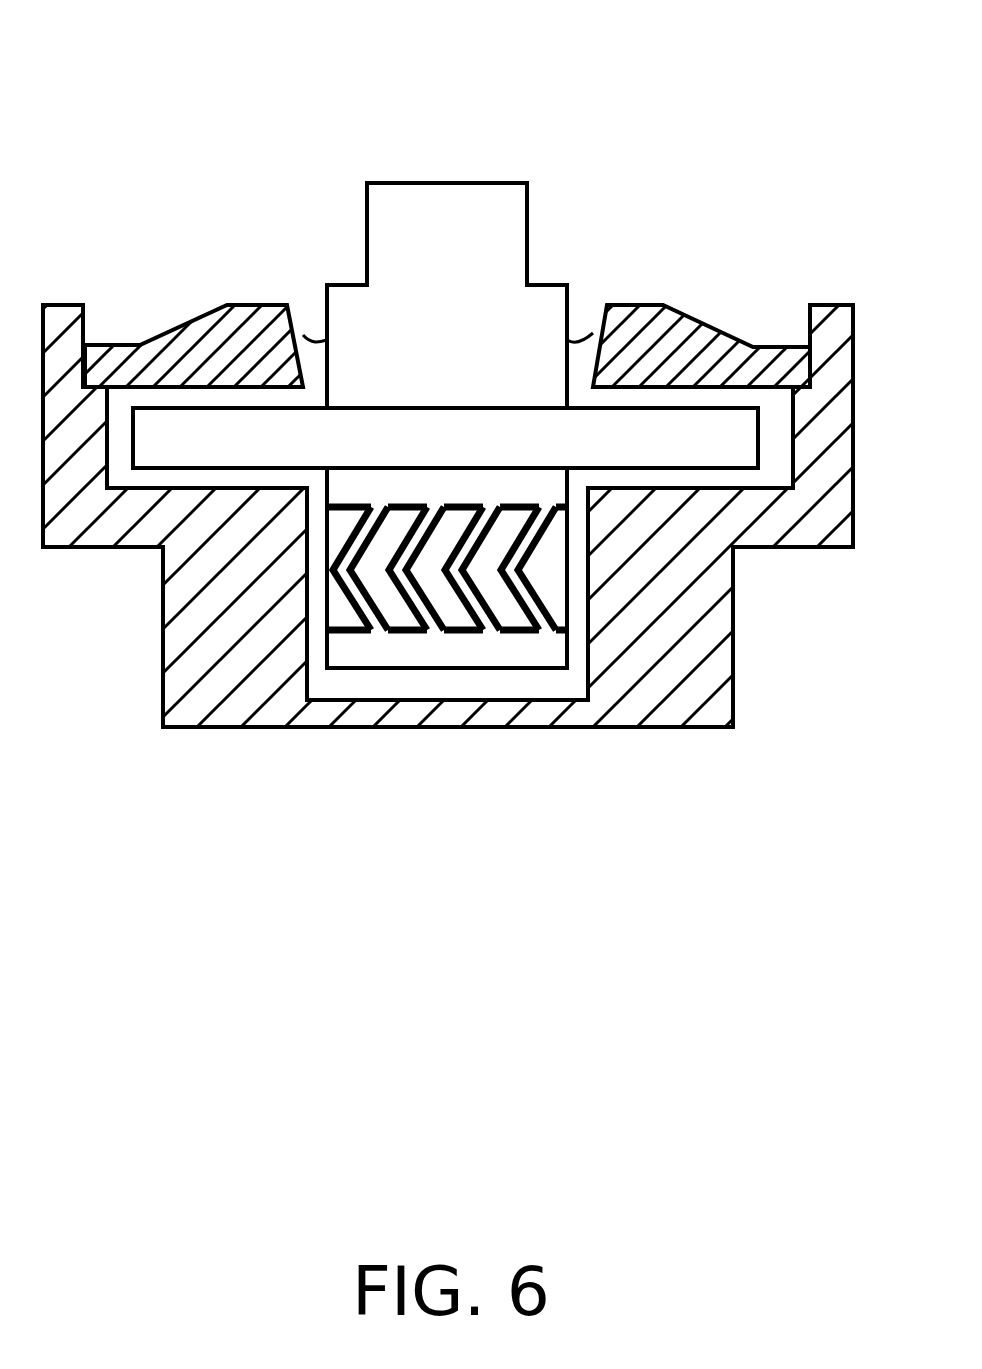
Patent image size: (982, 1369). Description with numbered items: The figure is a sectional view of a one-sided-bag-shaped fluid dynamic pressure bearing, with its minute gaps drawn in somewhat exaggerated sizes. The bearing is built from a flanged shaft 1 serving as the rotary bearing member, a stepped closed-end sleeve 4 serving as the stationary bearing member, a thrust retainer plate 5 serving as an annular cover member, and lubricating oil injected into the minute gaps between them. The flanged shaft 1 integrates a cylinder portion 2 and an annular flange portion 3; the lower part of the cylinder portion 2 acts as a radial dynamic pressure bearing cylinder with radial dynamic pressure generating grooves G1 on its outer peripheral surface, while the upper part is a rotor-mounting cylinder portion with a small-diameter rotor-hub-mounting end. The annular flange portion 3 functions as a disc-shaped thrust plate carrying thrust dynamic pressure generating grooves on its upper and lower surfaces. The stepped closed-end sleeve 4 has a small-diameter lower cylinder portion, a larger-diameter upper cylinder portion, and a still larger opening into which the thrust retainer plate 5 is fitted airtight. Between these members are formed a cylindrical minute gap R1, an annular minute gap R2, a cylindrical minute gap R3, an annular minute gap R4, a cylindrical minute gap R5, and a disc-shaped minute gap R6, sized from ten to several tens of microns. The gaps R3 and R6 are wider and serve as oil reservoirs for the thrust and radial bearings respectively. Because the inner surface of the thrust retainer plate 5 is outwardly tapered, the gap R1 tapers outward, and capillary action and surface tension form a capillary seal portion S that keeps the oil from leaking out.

The flanged shaft 1 is at (413, 290).
The cylinder portion 2 is at (368, 652).
The annular flange portion 3 is at (232, 437).
The stepped closed-end sleeve 4 is at (228, 625).
The thrust retainer plate 5 is at (141, 345).
The capillary seal portion S is at (314, 338).
The cylindrical minute gap R1 is at (583, 352).
The annular minute gap R2 is at (673, 400).
The cylindrical minute gap R3 is at (778, 440).
The annular minute gap R4 is at (659, 475).
The cylindrical minute gap R5 is at (577, 601).
The disc-shaped minute gap R6 is at (427, 682).
The radial dynamic pressure generating grooves G1 is at (492, 610).